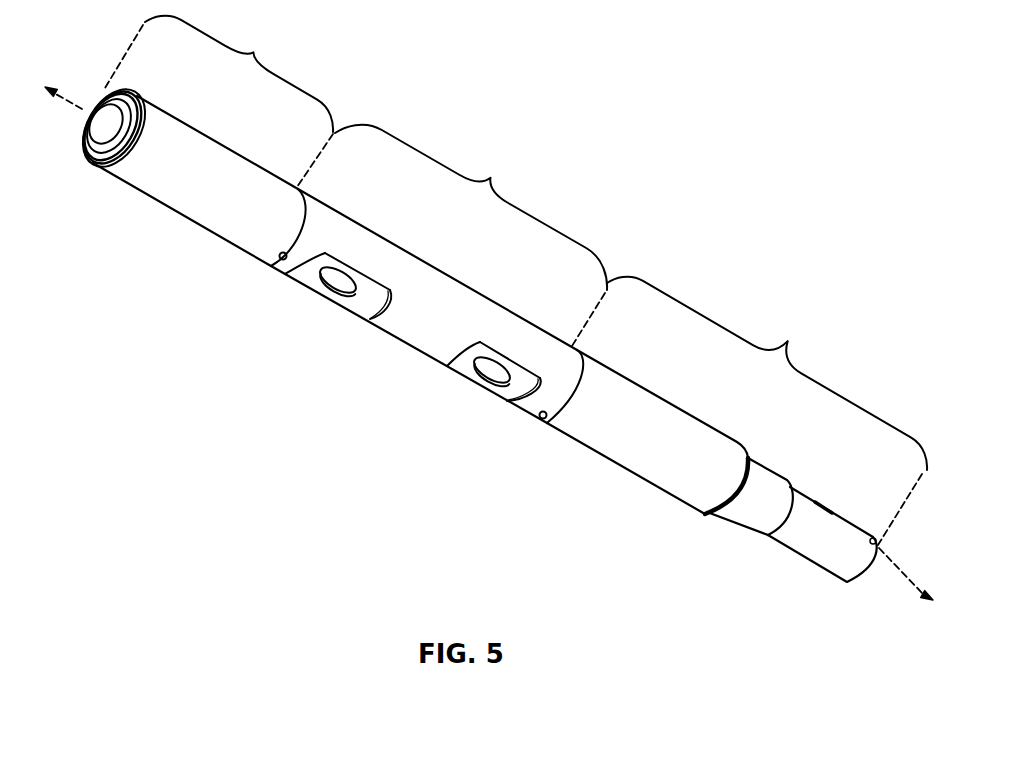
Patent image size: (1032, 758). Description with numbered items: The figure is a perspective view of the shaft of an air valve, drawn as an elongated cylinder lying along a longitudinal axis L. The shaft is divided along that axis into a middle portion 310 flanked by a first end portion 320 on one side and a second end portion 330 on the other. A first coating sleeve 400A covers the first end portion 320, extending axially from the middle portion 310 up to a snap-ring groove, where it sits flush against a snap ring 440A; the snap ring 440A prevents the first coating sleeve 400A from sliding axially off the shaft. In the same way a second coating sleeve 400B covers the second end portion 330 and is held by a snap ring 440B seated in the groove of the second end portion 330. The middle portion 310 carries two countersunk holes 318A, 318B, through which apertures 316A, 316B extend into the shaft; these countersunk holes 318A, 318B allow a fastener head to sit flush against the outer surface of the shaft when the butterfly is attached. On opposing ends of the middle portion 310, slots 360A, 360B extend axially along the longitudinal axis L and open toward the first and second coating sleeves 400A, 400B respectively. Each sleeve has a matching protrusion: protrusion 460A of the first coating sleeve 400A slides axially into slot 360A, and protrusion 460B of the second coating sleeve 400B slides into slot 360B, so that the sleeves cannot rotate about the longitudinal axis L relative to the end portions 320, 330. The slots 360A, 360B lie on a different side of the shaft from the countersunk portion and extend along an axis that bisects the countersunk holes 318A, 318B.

The longitudinal axis L is at (77, 105).
The middle portion 310 is at (439, 274).
The first end portion 320 is at (219, 101).
The second end portion 330 is at (767, 411).
The first coating sleeve 400A is at (175, 136).
The second coating sleeve 400B is at (677, 421).
The snap ring 440A is at (116, 90).
The snap ring 440B is at (749, 465).
The aperture 316A is at (353, 272).
The aperture 316B is at (522, 366).
The countersunk hole 318A is at (353, 302).
The countersunk hole 318B is at (524, 378).
The slot 360A is at (285, 261).
The slot 360B is at (540, 414).
The protrusion 460A is at (282, 259).
The protrusion 460B is at (547, 421).